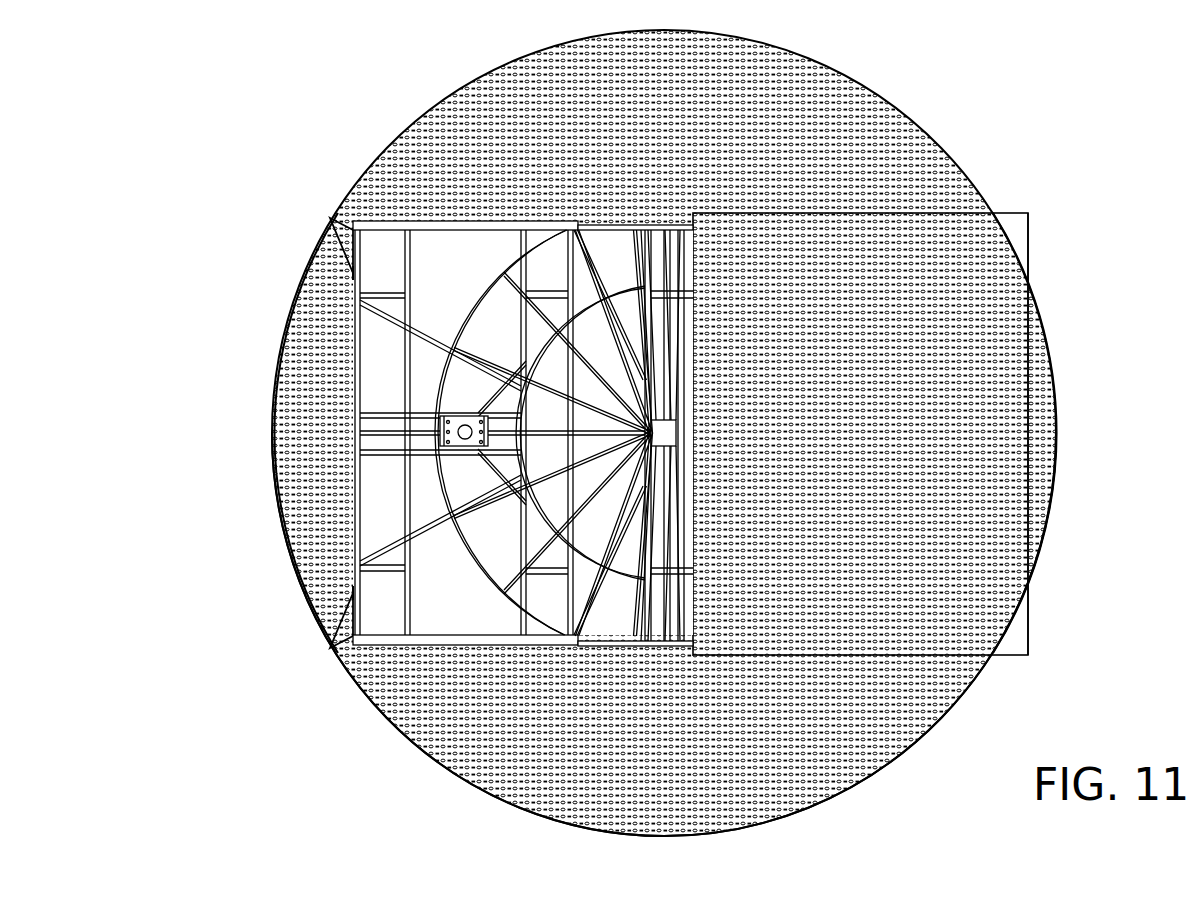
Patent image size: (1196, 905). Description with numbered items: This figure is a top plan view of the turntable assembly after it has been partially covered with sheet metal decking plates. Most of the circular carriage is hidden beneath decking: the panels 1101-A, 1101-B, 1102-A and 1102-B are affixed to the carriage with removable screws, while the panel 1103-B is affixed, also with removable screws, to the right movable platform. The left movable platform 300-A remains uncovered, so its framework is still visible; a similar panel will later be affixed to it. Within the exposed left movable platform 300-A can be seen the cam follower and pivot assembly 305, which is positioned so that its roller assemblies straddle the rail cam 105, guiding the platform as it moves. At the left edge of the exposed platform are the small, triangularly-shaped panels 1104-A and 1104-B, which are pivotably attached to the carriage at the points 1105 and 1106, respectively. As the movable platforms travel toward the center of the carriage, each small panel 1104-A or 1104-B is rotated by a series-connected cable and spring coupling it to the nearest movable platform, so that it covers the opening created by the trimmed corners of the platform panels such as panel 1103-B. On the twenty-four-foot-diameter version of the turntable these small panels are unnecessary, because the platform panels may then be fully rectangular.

The panel 1101-A is at (500, 97).
The panel 1101-B is at (500, 760).
The panel 1102-A is at (276, 356).
The panel 1102-B is at (1042, 352).
The panel 1103-B is at (960, 272).
The small triangularly-shaped panel 1104-A is at (322, 210).
The small triangularly-shaped panel 1104-B is at (322, 640).
The pivot point 1105 is at (344, 269).
The pivot point 1106 is at (344, 581).
The left movable platform 300-A is at (393, 461).
The rail cam 105 is at (505, 376).
The cam follower and pivot assembly 305 is at (455, 444).